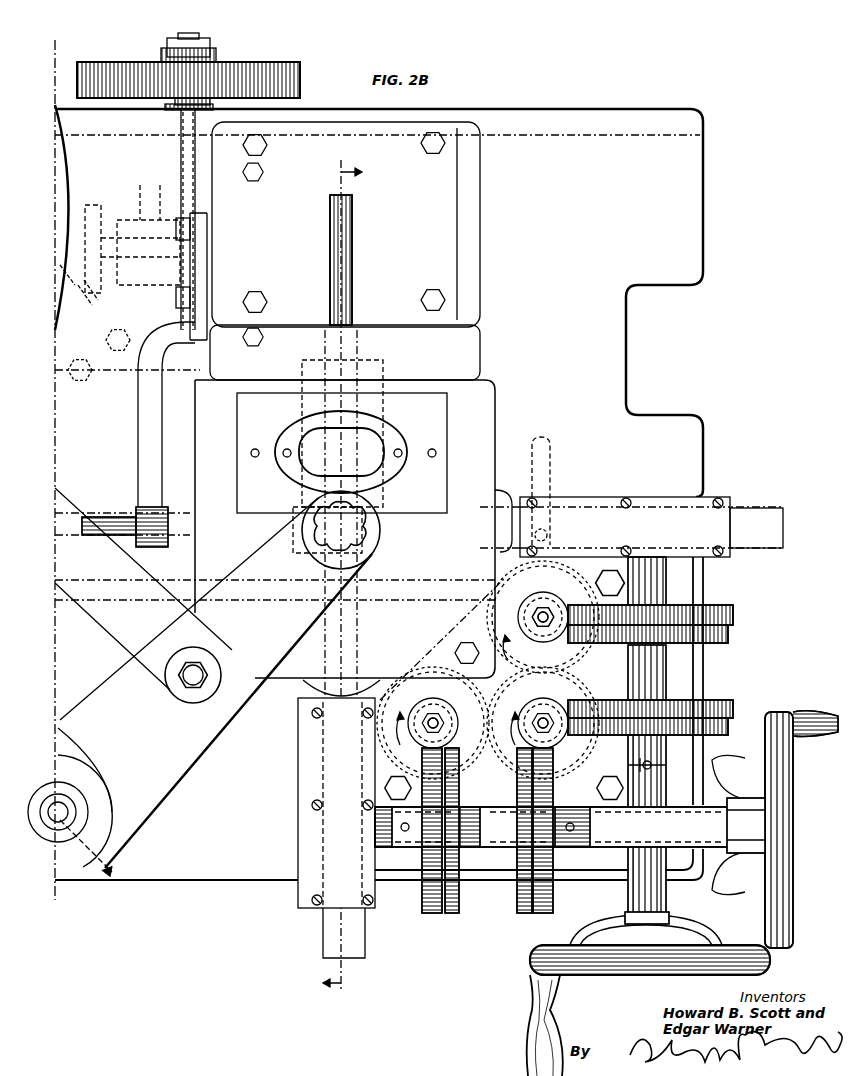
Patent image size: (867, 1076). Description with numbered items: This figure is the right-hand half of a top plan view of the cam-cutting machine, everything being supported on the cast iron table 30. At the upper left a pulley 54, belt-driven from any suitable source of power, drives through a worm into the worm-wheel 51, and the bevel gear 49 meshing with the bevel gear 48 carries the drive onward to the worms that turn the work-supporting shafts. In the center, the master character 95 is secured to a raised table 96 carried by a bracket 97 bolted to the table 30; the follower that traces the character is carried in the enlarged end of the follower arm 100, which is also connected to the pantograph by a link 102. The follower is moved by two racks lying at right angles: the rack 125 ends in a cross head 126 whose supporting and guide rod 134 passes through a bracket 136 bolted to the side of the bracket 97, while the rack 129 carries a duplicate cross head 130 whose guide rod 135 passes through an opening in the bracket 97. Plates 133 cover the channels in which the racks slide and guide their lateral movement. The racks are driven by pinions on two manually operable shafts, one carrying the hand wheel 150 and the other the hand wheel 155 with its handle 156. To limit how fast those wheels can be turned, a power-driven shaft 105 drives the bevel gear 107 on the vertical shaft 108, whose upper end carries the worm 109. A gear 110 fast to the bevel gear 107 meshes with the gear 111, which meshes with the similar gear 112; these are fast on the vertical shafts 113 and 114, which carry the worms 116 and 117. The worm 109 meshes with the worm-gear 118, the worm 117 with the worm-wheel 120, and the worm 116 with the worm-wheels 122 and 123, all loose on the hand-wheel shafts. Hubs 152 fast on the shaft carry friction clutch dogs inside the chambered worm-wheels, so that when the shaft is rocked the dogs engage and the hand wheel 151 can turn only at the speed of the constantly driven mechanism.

The table 30 is at (703, 178).
The pulley 54 is at (300, 80).
The worm-wheel 51 is at (181, 156).
The bevel gear 49 is at (85, 205).
The bevel gear 48 is at (75, 305).
The bracket 97 is at (480, 258).
The supporting and guide rod 135 is at (352, 245).
The raised table 96 is at (495, 410).
The master character 95 is at (395, 430).
The follower arm 100 is at (190, 745).
The link 102 is at (115, 640).
The supporting and guide rod 134 is at (100, 515).
The bracket 136 is at (138, 452).
The cross head 126 is at (303, 688).
The plates 133 is at (700, 497).
The rack 129 is at (365, 945).
The rack 125 is at (758, 508).
The cross head 130 is at (500, 488).
The shaft 105 is at (550, 475).
The hubs 152 is at (666, 752).
The worm-gear 118 is at (712, 605).
The worm-wheel 122 is at (728, 700).
The bevel gear 107 is at (488, 610).
The gear 110 is at (490, 645).
The worm 109 is at (518, 617).
The shaft 108 is at (545, 612).
The gear 112 is at (420, 668).
The worm 117 is at (426, 692).
The shaft 114 is at (438, 723).
The gear 111 is at (585, 683).
The worm 116 is at (520, 710).
The shaft 113 is at (543, 713).
The worm-wheel 120 is at (438, 913).
The worm-wheel 123 is at (540, 913).
The hand wheel 155 is at (793, 758).
The handle 156 is at (812, 703).
The hand wheel 150 is at (620, 975).
The hand wheel 151 is at (553, 1010).